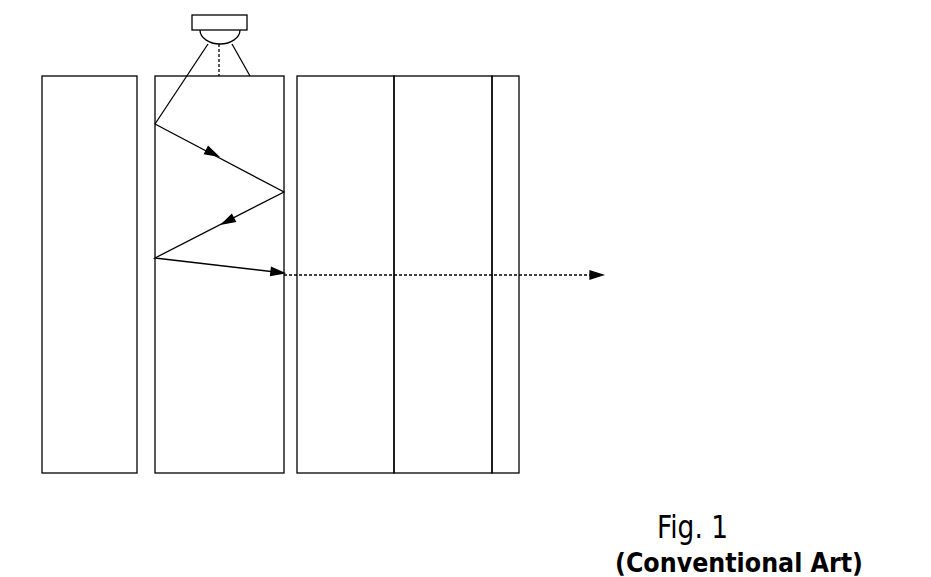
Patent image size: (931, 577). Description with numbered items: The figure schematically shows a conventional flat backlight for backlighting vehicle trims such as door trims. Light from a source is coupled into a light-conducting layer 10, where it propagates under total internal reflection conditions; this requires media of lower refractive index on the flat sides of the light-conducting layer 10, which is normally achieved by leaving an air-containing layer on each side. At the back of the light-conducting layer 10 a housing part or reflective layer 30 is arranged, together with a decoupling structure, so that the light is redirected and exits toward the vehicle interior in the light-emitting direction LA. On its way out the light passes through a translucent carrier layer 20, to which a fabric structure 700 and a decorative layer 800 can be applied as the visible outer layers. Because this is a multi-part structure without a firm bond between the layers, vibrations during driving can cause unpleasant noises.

The reflective layer 30 is at (89, 456).
The light-conducting layer 10 is at (218, 456).
The translucent carrier layer 20 is at (344, 456).
The fabric structure 700 is at (442, 456).
The decorative layer 800 is at (503, 456).
The light-emitting direction LA is at (560, 274).